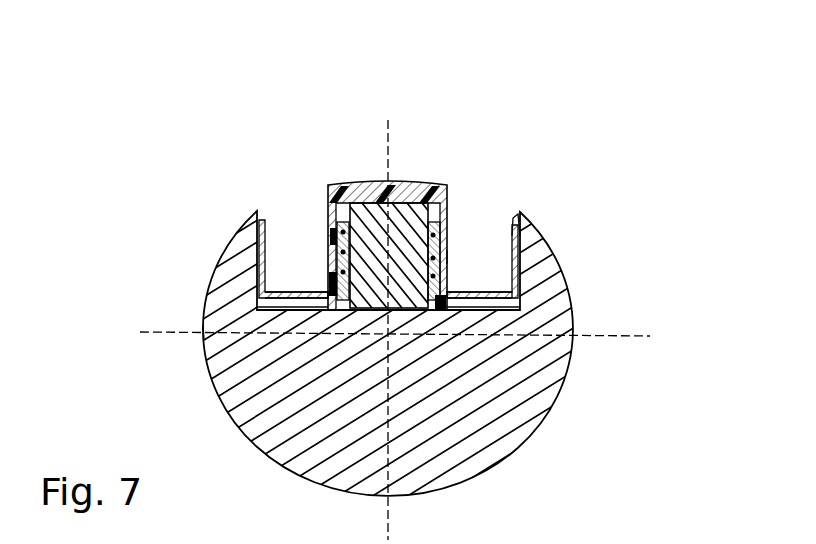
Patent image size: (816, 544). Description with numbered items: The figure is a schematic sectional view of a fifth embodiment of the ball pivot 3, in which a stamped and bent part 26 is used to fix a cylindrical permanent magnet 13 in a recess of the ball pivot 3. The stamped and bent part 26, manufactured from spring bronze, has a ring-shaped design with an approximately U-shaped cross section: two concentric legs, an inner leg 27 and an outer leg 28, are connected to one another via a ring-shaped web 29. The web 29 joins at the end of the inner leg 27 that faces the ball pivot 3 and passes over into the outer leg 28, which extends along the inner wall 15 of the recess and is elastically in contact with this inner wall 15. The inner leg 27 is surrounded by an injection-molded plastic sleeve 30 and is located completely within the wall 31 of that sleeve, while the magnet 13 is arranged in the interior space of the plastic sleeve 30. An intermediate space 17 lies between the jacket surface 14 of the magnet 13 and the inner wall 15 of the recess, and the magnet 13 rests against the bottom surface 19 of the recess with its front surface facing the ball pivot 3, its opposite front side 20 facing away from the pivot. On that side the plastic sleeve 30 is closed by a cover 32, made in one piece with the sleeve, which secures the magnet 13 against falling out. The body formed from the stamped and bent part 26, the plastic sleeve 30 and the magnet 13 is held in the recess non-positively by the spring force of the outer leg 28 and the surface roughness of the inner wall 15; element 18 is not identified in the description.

The ball pivot 3 is at (303, 438).
The permanent magnet 13 is at (403, 185).
The jacket surface 14 is at (337, 187).
The inner wall 15 is at (258, 297).
The intermediate space 17 is at (493, 264).
The bottom surface 18 is at (350, 306).
The bottom surface 19 is at (203, 334).
The front side 20 is at (360, 184).
The stamped and bent part 26 is at (486, 302).
The inner leg 27 is at (333, 226).
The outer leg 28 is at (518, 232).
The web 29 is at (298, 293).
The plastic sleeve 30 is at (448, 257).
The wall 31 is at (441, 221).
The cover 32 is at (422, 197).